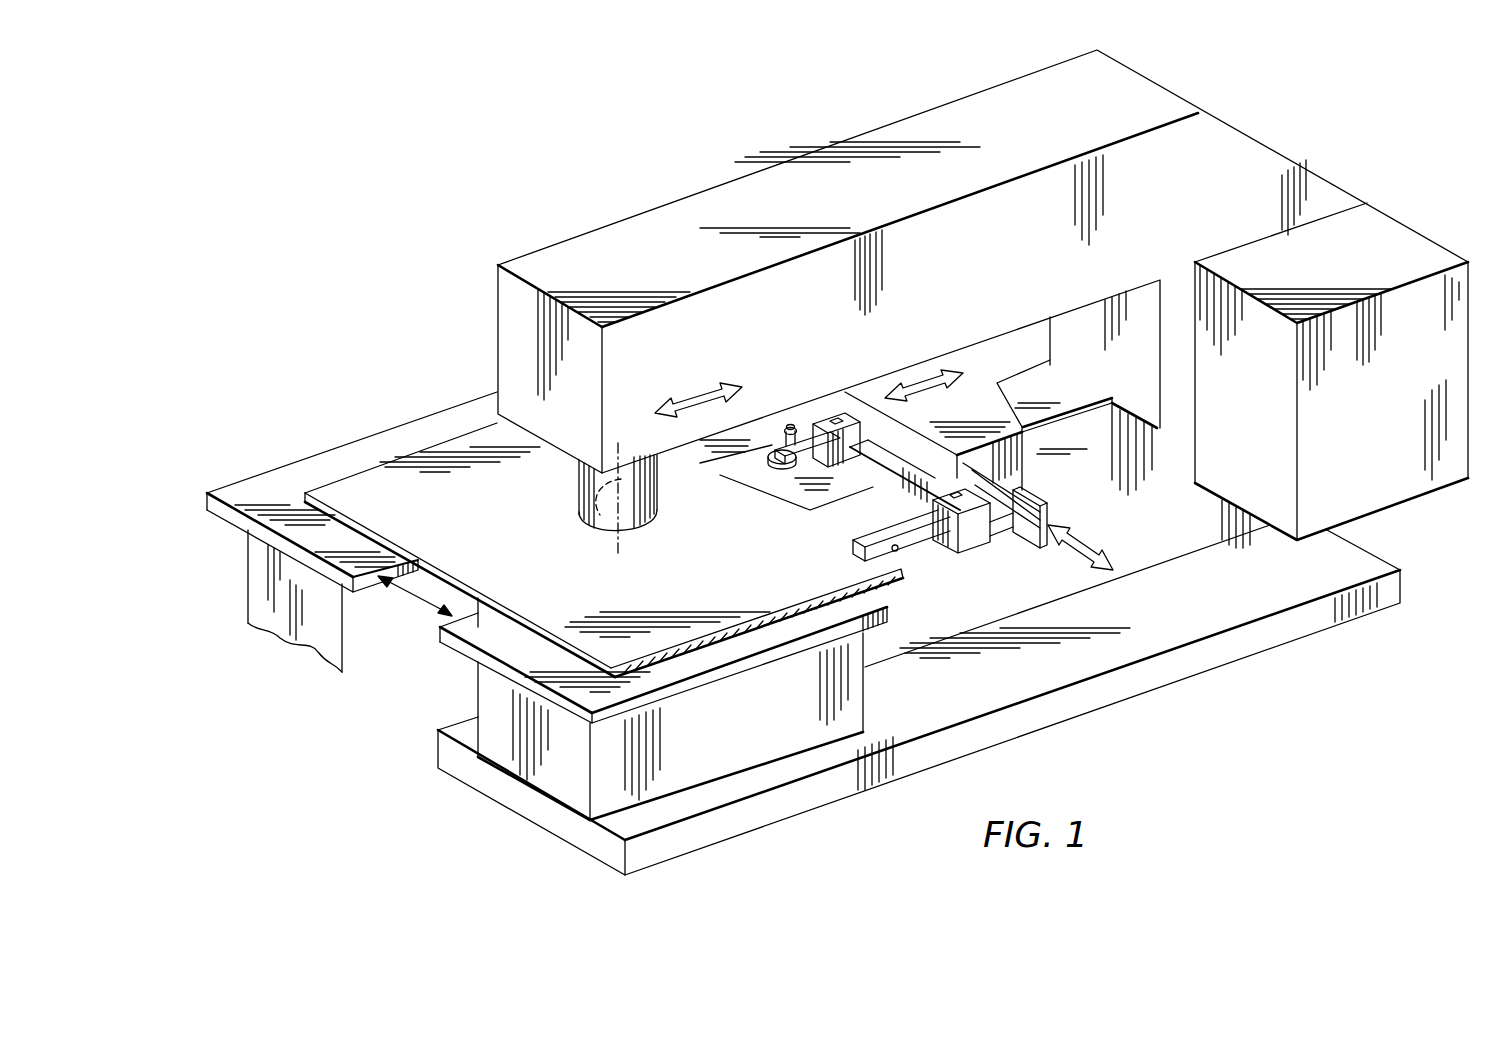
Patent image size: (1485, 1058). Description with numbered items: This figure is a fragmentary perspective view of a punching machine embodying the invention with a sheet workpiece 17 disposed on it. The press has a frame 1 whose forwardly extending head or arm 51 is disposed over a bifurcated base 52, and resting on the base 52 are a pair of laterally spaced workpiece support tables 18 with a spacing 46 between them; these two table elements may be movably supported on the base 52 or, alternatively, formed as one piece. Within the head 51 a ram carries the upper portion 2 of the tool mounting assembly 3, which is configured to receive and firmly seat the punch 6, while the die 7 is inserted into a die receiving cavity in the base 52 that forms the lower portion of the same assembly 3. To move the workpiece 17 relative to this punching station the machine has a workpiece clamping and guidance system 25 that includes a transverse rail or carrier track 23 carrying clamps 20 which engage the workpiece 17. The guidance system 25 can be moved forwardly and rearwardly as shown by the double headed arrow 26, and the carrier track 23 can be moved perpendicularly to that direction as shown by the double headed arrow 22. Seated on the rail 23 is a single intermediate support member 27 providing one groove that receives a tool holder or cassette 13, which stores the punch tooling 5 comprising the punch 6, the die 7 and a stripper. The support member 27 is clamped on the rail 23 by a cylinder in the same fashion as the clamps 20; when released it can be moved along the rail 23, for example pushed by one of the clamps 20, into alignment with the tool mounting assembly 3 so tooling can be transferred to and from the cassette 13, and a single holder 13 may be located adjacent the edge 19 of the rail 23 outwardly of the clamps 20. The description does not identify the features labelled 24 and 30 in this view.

The frame 1 is at (712, 230).
The upper portion of the tool mounting assembly 2 is at (590, 523).
The tool mounting assembly 3 is at (656, 507).
The punch tooling 5 is at (777, 455).
The punch 6 is at (792, 426).
The die 7 is at (805, 467).
The tool holder or cassette 13 is at (813, 457).
The workpiece 17 is at (400, 490).
The workpiece support tables 18 is at (374, 591).
The edge of the transverse rail 19 is at (906, 588).
The clamps 20 is at (858, 545).
The double headed arrow 22 is at (1073, 558).
The transverse rail or carrier track 23 is at (1022, 522).
The direction arrow 24 is at (697, 402).
The workpiece clamping and guidance system 25 is at (975, 422).
The double headed arrow 26 is at (930, 378).
The intermediate support member 27 is at (835, 426).
The clamp jaw 30 is at (813, 426).
The spacing 46 is at (428, 605).
The head or arm 51 is at (500, 302).
The bifurcated base 52 is at (573, 755).